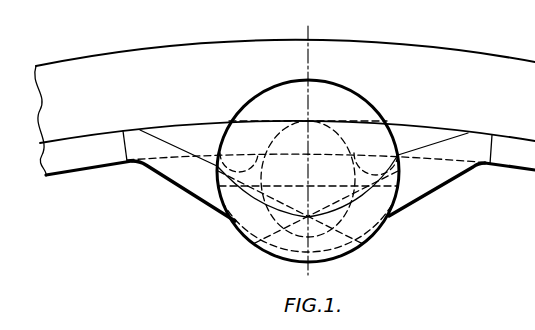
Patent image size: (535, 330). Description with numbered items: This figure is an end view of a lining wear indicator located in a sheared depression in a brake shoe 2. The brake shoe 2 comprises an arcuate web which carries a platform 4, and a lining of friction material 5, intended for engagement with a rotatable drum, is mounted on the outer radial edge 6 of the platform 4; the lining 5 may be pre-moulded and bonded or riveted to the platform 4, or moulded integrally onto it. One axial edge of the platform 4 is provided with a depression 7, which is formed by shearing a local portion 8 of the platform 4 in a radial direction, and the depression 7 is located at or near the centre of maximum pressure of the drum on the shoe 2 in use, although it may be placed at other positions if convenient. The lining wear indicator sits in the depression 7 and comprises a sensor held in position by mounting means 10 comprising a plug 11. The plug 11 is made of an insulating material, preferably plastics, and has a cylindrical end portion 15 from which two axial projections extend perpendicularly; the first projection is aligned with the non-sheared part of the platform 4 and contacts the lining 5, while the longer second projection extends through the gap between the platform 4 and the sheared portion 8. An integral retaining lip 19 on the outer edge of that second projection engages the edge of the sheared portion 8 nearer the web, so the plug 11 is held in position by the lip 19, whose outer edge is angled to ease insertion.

The brake shoe 2 is at (308, 26).
The platform 4 is at (92, 167).
The lining of friction material 5 is at (484, 67).
The outer radial edge 6 is at (72, 142).
The depression 7 is at (211, 167).
The sheared portion 8 is at (426, 185).
The mounting means 10 is at (358, 101).
The plug 11 is at (254, 106).
The cylindrical end portion 15 is at (279, 252).
The retaining lip 19 is at (363, 244).